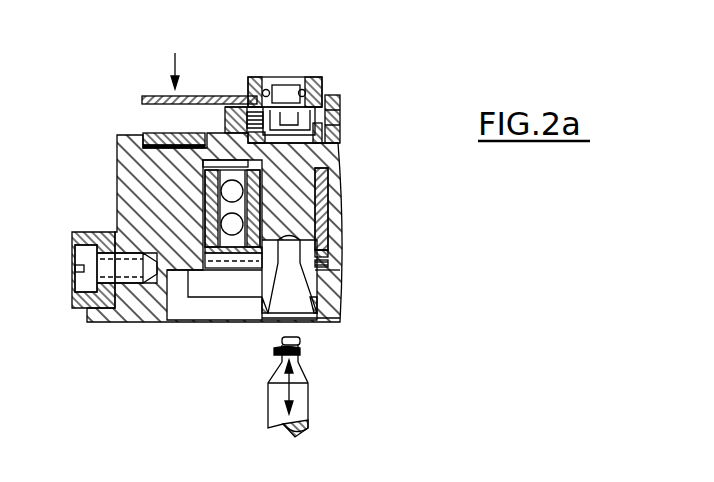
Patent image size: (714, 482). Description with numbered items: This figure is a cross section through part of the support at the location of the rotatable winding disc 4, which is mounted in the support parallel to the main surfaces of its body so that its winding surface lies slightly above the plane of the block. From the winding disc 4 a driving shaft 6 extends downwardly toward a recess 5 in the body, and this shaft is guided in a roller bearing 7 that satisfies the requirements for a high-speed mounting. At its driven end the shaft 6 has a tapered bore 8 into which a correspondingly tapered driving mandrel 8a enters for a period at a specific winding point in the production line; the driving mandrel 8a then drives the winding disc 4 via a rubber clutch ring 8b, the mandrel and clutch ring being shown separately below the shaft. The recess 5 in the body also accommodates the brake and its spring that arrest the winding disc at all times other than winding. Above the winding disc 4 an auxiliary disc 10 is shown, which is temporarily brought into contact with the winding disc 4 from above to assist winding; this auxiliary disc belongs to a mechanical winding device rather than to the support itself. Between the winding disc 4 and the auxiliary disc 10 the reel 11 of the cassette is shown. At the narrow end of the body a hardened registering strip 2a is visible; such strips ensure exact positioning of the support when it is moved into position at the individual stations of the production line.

The registering strip 2a is at (83, 309).
The rotatable winding disc 4 is at (160, 137).
The recess 5 is at (177, 298).
The driving shaft 6 is at (305, 203).
The roller bearing 7 is at (233, 225).
The tapered bore 8 is at (290, 295).
The driving mandrel 8a is at (280, 400).
The rubber clutch ring 8b is at (301, 354).
The auxiliary disc 10 is at (248, 82).
The reel 11 is at (212, 100).